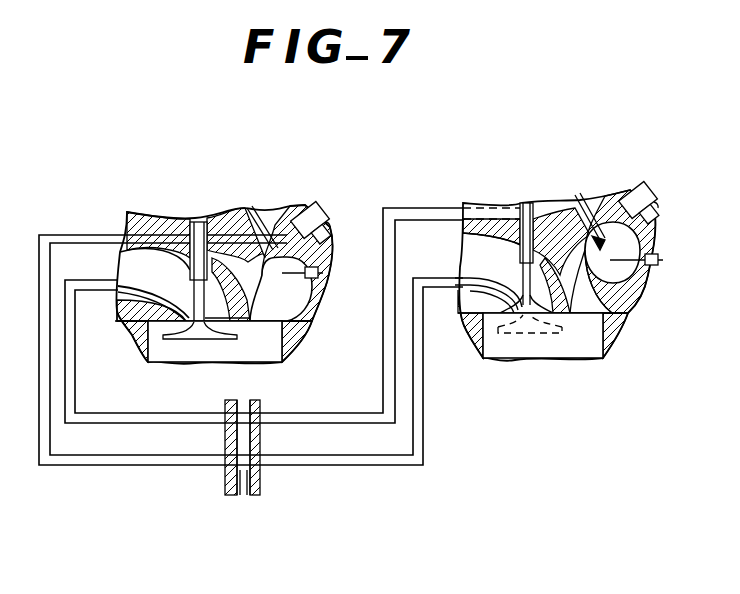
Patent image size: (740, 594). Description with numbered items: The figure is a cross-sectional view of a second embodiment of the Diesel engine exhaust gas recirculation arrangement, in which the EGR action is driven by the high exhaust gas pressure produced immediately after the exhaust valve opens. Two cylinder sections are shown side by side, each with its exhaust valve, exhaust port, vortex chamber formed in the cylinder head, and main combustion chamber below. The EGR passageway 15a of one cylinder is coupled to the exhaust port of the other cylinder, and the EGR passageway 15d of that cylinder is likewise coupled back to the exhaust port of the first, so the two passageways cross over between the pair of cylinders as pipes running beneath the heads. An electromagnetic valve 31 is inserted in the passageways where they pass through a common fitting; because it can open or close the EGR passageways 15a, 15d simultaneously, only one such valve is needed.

The EGR passageway 15a is at (380, 466).
The EGR passageway 15d is at (357, 387).
The electromagnetic valve 31 is at (225, 484).